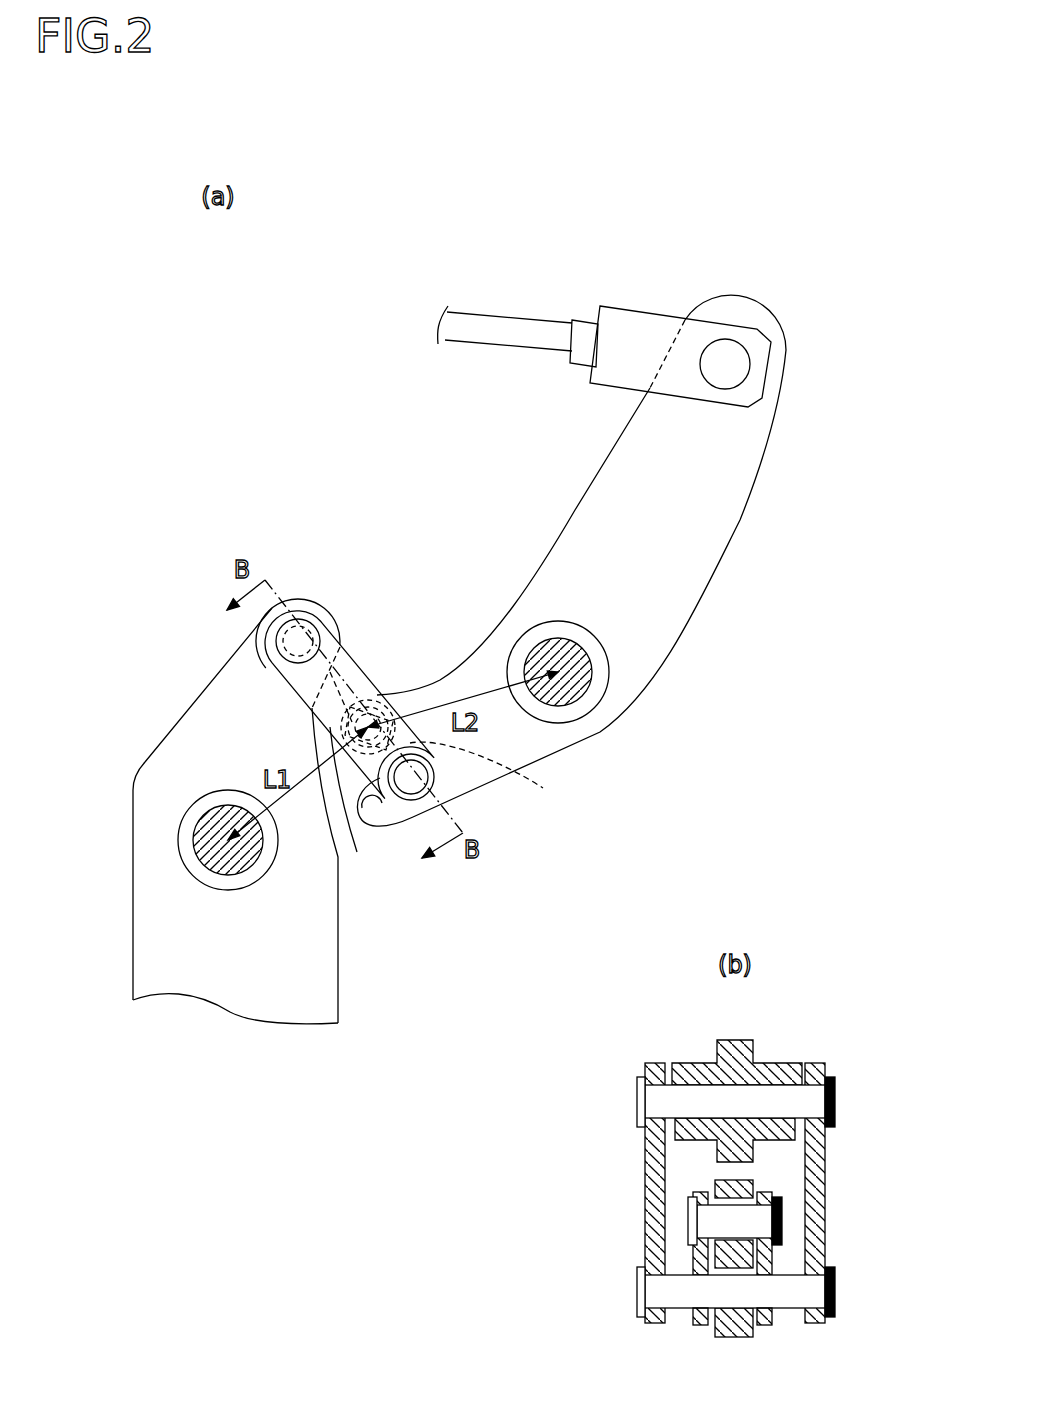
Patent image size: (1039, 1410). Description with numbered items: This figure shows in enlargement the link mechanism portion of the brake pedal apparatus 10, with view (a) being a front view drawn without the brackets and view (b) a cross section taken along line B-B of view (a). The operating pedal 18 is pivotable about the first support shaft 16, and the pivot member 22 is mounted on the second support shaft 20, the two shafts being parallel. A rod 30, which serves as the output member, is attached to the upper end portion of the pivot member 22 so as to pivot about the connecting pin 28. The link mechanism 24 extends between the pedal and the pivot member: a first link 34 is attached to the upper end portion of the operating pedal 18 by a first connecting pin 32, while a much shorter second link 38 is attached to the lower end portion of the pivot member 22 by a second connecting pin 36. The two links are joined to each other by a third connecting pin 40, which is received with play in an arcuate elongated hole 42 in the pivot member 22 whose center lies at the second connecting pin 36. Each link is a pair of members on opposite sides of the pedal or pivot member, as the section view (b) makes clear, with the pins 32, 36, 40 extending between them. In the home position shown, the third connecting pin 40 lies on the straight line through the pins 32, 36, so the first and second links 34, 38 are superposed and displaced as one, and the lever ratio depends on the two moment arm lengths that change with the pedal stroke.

The brake pedal apparatus 10 is at (345, 318).
The first support shaft 16 is at (217, 830).
The operating pedal 18 is at (240, 988).
The second support shaft 20 is at (575, 687).
The pivot member 22 is at (707, 545).
The link mechanism 24 is at (407, 625).
The connecting pin 28 is at (730, 364).
The rod 30 is at (523, 332).
The first connecting pin 32 is at (277, 641).
The first link 34 is at (353, 672).
The second connecting pin 36 is at (405, 712).
The second link 38 is at (845, 1255).
The third connecting pin 40 is at (410, 800).
The elongated hole 42 is at (352, 812).